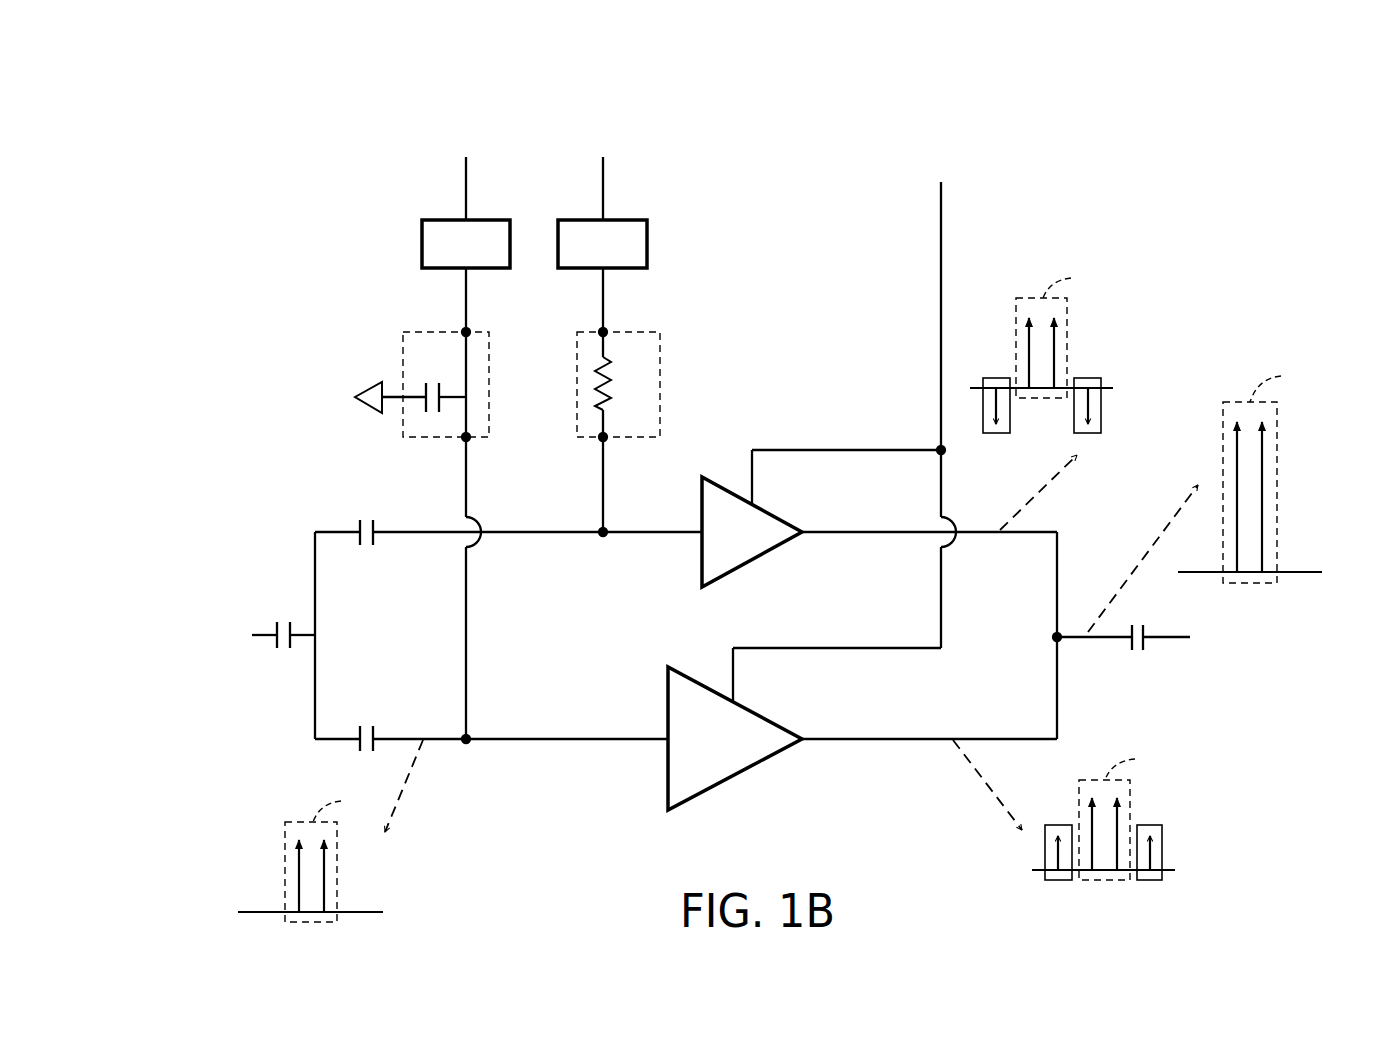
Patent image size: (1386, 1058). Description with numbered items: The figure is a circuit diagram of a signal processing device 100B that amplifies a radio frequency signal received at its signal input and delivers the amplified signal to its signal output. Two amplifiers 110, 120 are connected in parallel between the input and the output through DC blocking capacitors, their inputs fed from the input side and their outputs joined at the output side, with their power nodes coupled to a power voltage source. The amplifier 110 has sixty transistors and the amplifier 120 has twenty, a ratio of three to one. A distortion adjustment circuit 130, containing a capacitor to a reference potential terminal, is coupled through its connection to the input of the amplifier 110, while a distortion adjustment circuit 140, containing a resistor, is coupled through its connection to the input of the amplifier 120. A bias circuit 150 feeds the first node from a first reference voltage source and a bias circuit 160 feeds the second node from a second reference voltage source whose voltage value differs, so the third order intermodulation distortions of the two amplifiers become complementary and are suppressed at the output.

The signal processing device 100B is at (1385, 912).
The amplifier 110 is at (735, 775).
The amplifier 120 is at (755, 560).
The distortion adjustment circuit 130 is at (425, 331).
The distortion adjustment circuit 140 is at (660, 394).
The bias circuit 150 is at (443, 219).
The bias circuit 160 is at (627, 219).